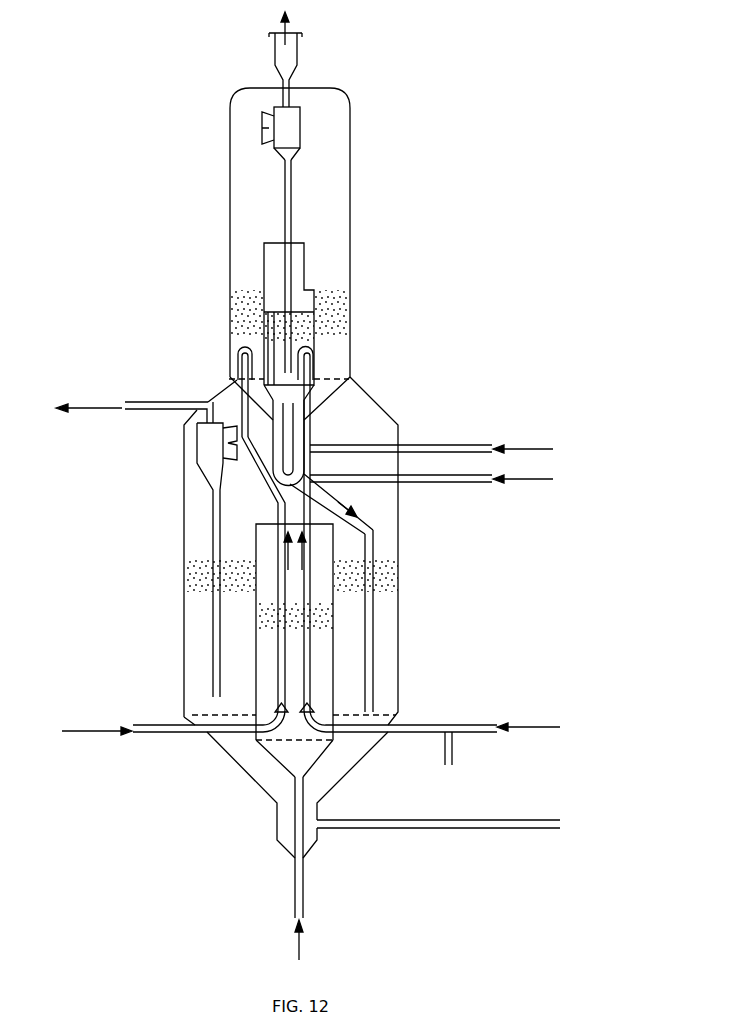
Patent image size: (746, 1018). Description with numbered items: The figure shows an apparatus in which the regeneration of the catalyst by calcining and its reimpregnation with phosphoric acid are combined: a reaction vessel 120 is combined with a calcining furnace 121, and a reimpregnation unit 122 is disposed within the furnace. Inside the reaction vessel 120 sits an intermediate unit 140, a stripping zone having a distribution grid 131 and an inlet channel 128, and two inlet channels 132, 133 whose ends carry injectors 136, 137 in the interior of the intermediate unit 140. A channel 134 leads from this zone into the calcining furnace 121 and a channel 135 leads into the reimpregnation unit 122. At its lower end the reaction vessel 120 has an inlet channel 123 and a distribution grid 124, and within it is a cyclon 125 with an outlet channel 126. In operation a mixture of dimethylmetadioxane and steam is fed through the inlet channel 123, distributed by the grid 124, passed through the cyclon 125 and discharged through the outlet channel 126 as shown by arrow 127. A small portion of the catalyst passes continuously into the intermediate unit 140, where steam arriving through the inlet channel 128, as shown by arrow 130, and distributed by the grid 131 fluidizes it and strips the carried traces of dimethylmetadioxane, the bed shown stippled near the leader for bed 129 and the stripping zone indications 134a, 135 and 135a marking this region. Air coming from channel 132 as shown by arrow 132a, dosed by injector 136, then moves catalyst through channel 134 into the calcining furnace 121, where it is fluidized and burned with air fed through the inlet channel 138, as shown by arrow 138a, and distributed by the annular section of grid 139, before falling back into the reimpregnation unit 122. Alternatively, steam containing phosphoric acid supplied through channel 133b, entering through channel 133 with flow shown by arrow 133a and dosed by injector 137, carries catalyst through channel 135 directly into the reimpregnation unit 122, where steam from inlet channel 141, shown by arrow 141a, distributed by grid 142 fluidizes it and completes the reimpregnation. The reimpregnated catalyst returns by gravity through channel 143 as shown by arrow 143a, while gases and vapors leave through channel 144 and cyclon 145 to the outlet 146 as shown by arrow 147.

The reaction vessel 120 is at (400, 595).
The calcining furnace 121 is at (345, 303).
The reimpregnation unit 122 is at (306, 333).
The inlet channel 123 is at (457, 820).
The distribution grid 124 is at (222, 720).
The cyclon 125 is at (197, 458).
The outlet channel 126 is at (138, 402).
The arrow 127 is at (89, 400).
The inlet channel 128 is at (303, 890).
The catalyst bed 129 is at (256, 627).
The arrow 130 is at (299, 950).
The distribution grid 131 is at (300, 741).
The inlet channel 132 is at (180, 738).
The arrow 132a is at (97, 722).
The inlet channel 133 is at (490, 732).
The fluidizing gas inlet 133a is at (528, 719).
The channel 133b is at (445, 749).
The channel 134 is at (256, 545).
The stripping gas inlets 134a is at (256, 564).
The channel 135 is at (256, 592).
The bed level 135a is at (256, 557).
The injector 136 is at (273, 706).
The injector 137 is at (318, 702).
The inlet channel 138 is at (458, 445).
The arrow 138a is at (524, 441).
The distribution grid 139 is at (330, 379).
The intermediate unit 140 is at (335, 652).
The inlet channel 141 is at (458, 483).
The arrow 141a is at (524, 471).
The distribution grid 142 is at (292, 390).
The channel 143 is at (373, 553).
The arrow 143a is at (352, 509).
The channel 144 is at (292, 190).
The cyclon 145 is at (288, 130).
The outlet channel 146 is at (285, 57).
The arrow 147 is at (287, 26).